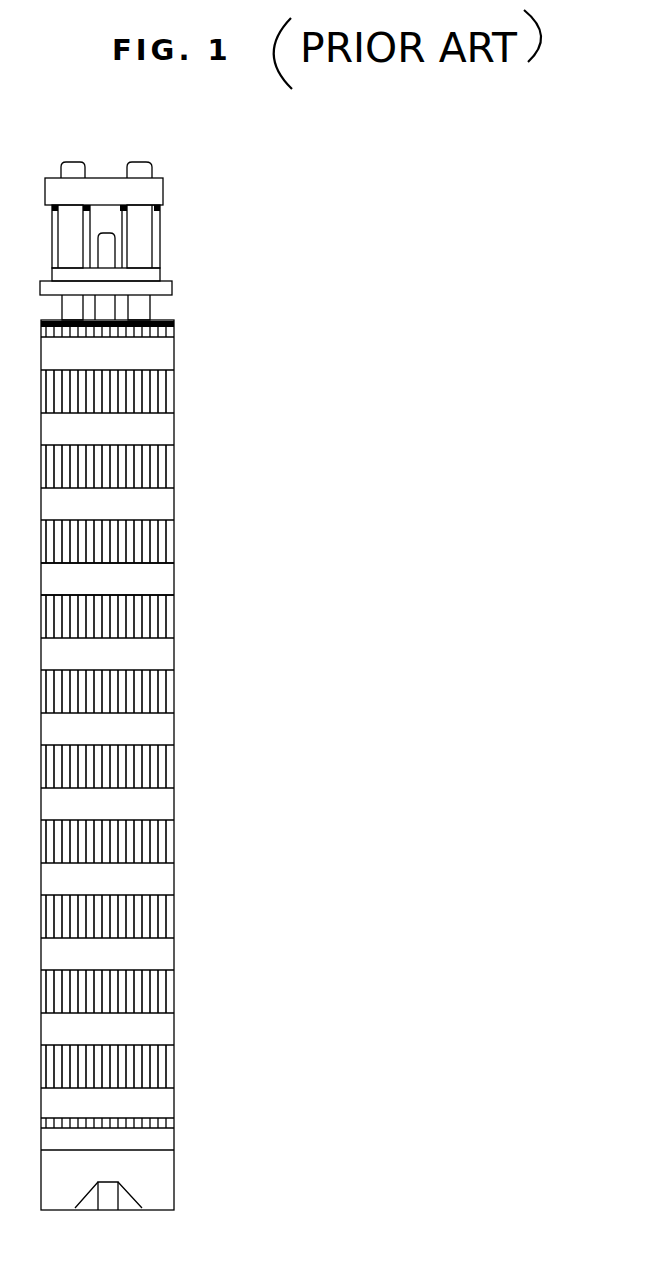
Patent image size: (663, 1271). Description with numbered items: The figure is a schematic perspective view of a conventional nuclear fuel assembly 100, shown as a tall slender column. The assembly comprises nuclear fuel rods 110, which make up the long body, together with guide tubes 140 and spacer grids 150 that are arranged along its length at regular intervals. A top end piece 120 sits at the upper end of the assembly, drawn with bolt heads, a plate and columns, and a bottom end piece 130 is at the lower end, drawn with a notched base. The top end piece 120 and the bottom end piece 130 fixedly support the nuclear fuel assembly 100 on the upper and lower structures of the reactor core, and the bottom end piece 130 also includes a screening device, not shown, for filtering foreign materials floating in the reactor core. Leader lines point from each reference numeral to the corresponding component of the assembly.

The nuclear fuel assembly 100 is at (193, 208).
The nuclear fuel rods 110 is at (160, 470).
The top end piece 120 is at (160, 292).
The bottom end piece 130 is at (153, 1166).
The guide tubes 140 is at (150, 313).
The spacer grids 150 is at (155, 577).